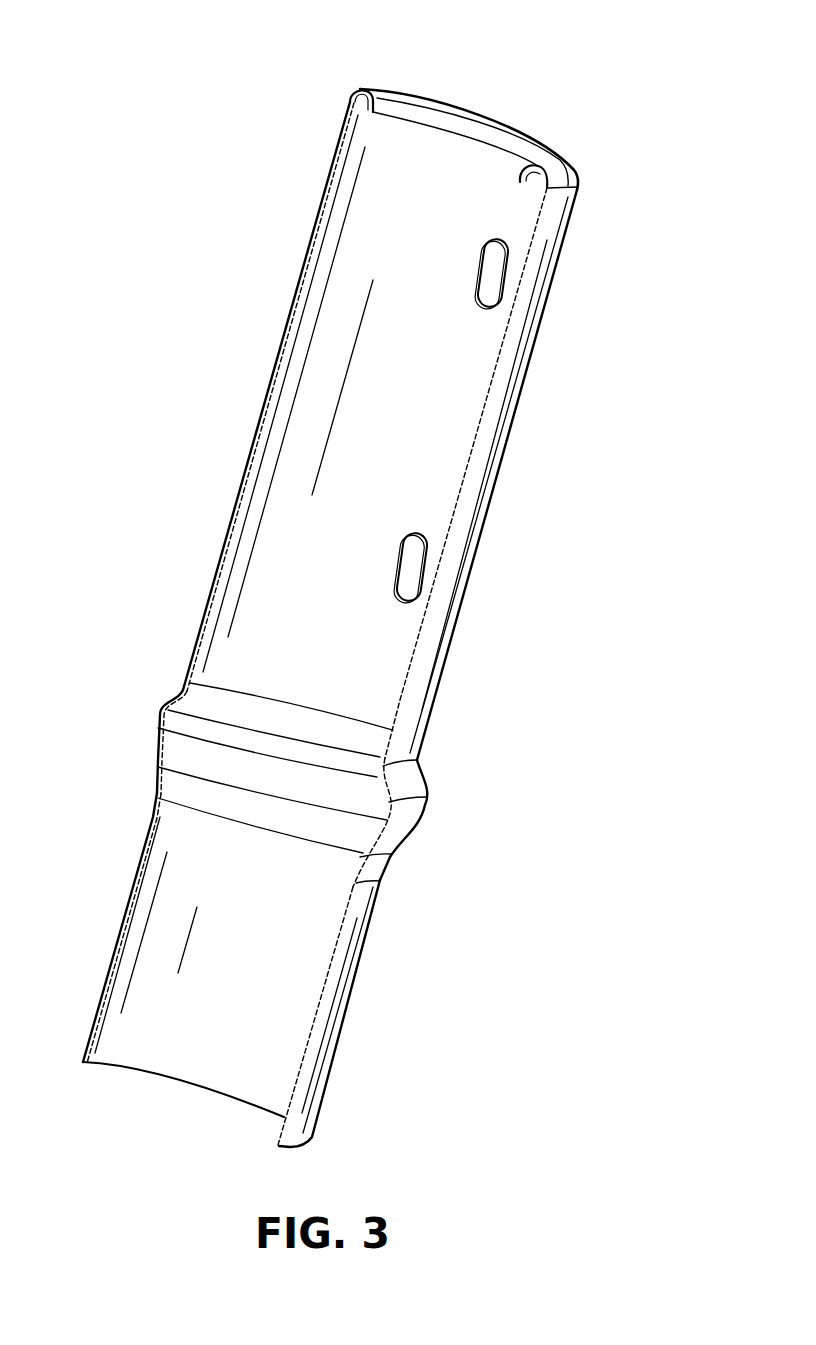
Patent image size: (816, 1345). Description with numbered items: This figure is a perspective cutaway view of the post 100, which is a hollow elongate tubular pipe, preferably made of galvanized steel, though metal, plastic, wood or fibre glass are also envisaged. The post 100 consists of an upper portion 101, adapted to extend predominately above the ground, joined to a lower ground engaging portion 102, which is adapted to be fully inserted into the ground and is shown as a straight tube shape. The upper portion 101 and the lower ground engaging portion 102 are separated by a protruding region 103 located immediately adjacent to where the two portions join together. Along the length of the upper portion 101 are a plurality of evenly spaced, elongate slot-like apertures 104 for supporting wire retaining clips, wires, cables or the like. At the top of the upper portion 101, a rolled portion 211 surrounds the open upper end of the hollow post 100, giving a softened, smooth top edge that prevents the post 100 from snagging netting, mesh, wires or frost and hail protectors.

The post 100 is at (186, 146).
The upper portion 101 is at (505, 442).
The lower ground engaging portion 102 is at (347, 963).
The protruding region 103 is at (410, 813).
The apertures 104 is at (478, 265).
The rolled portion 211 is at (485, 130).